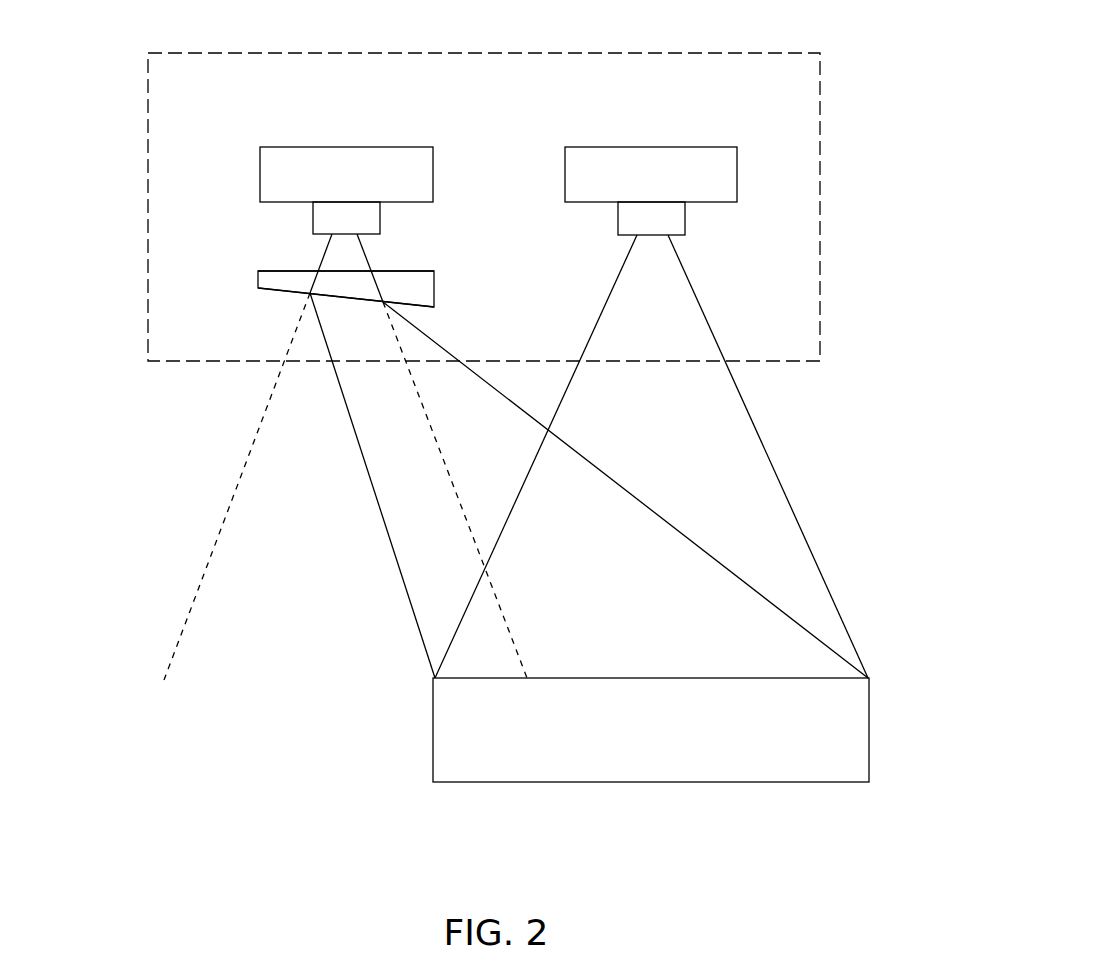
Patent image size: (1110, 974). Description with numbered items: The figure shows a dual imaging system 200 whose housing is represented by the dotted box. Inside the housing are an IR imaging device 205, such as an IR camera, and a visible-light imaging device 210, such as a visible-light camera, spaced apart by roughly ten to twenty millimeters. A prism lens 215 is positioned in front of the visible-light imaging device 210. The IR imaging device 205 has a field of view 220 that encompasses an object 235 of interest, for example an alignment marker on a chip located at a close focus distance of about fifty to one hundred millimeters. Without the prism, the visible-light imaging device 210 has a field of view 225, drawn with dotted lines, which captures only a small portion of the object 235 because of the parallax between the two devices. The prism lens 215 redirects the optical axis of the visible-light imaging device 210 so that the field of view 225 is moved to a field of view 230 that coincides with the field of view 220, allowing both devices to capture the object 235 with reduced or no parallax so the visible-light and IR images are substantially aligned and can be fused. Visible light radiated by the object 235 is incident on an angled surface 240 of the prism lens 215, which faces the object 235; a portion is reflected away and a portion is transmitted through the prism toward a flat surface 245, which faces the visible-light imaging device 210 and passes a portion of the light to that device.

The dual imaging system 200 is at (146, 70).
The IR imaging device 205 is at (703, 147).
The visible-light imaging device 210 is at (385, 147).
The prism lens 215 is at (436, 287).
The field of view 220 is at (787, 497).
The field of view 225 is at (228, 512).
The field of view 230 is at (390, 545).
The object 235 is at (869, 722).
The angled surface 240 is at (283, 292).
The flat surface 245 is at (283, 270).